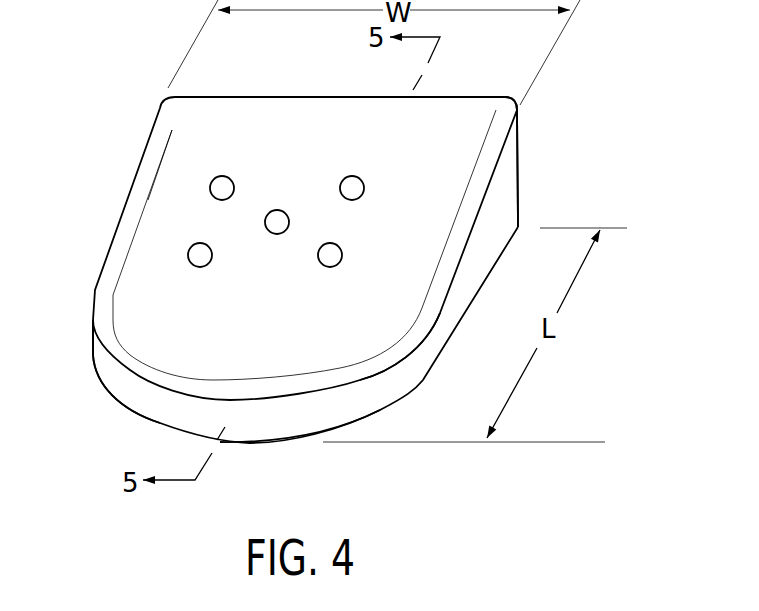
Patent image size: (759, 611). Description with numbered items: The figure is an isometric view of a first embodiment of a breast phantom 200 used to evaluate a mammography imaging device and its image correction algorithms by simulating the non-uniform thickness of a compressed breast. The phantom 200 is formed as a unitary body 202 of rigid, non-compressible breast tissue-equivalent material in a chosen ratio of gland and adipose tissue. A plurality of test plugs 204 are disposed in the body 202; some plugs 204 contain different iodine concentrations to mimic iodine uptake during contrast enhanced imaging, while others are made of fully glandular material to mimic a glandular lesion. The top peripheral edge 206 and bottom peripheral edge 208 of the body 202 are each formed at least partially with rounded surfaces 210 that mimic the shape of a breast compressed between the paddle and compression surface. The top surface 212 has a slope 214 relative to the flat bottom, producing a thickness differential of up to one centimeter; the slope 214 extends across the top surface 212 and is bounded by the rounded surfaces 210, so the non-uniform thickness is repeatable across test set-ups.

The breast phantom 200 is at (548, 163).
The unitary body 202 is at (523, 122).
The test plugs 204 is at (222, 190).
The top peripheral edge 206 is at (436, 295).
The bottom peripheral edge 208 is at (292, 450).
The rounded surfaces 210 is at (130, 357).
The top surface 212 is at (314, 190).
The slope 214 is at (262, 175).